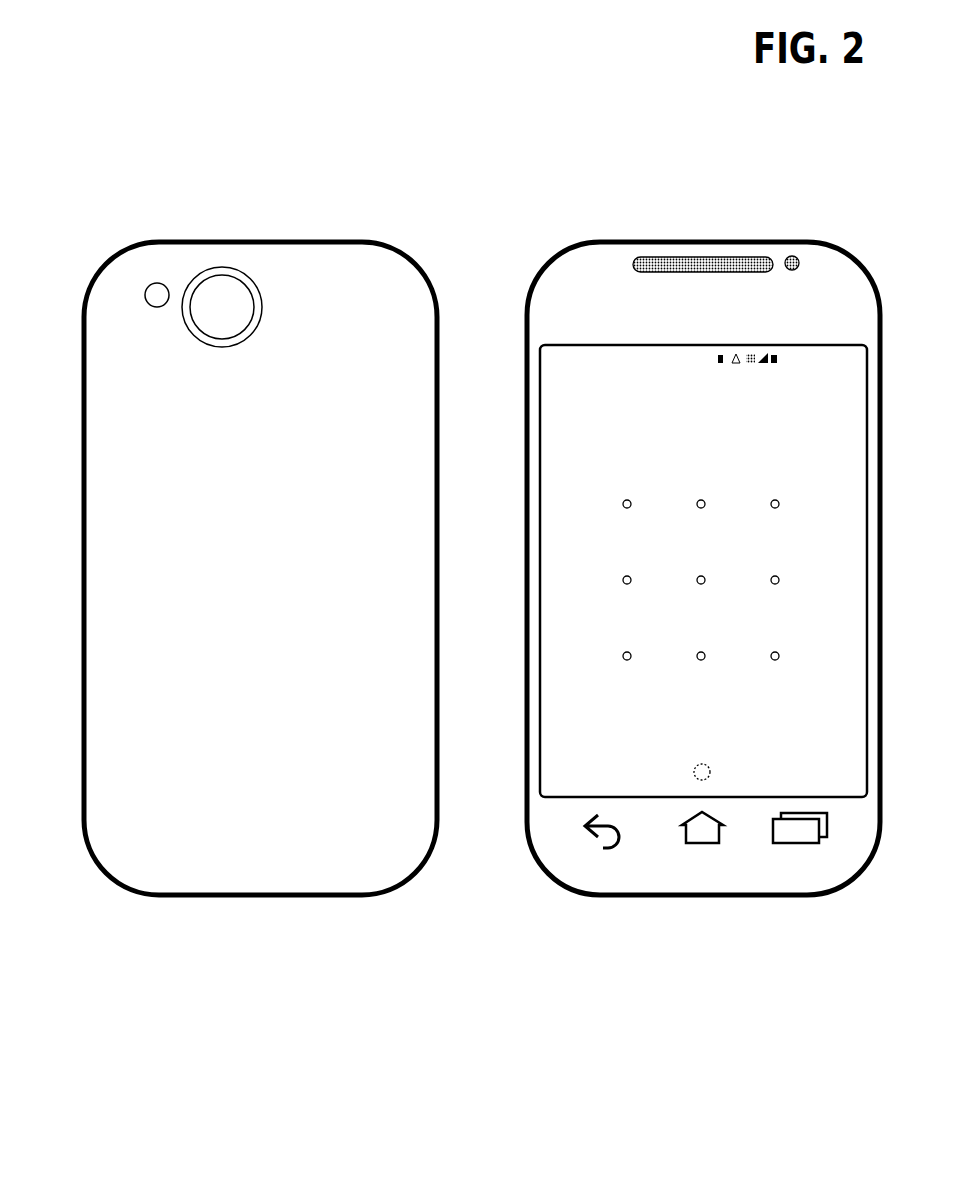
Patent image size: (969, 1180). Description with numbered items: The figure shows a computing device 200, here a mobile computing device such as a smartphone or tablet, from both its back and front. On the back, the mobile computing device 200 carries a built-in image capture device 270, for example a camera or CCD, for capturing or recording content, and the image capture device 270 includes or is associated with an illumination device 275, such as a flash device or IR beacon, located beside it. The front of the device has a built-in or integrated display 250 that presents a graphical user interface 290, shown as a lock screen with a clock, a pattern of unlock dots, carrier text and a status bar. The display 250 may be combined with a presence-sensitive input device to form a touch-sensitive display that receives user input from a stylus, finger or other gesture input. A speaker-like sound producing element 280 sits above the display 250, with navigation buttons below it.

The computing device 200 is at (257, 902).
The display 250 is at (570, 801).
The image capture device 270 is at (197, 267).
The illumination device 275 is at (149, 310).
The speaker 280 is at (620, 254).
The graphical user interface 290 is at (579, 700).